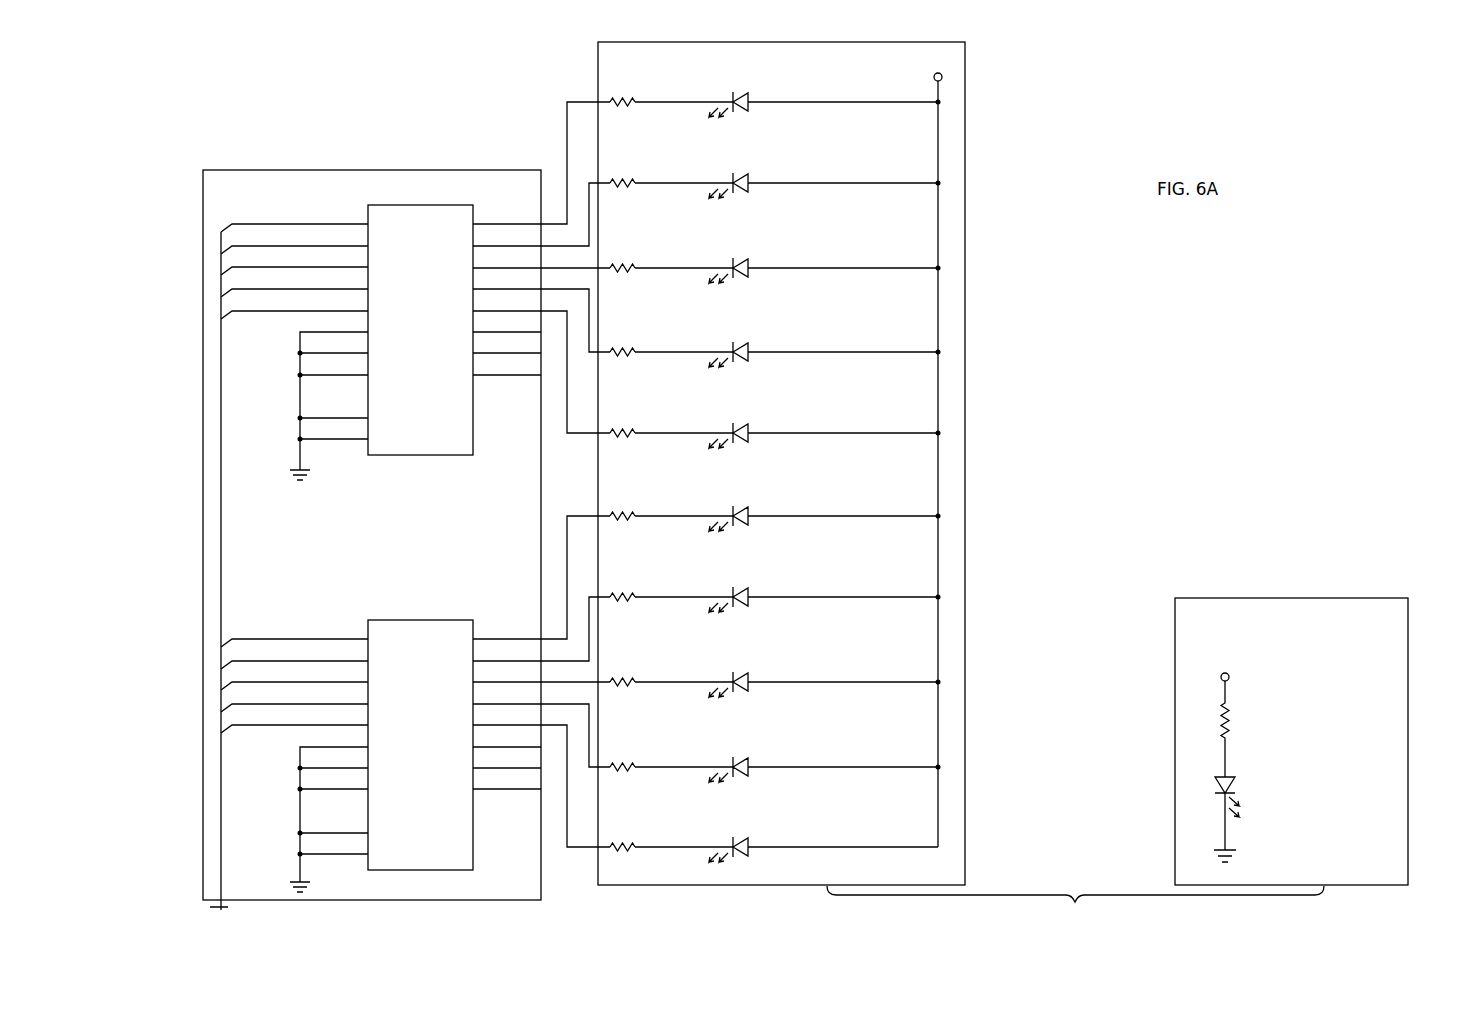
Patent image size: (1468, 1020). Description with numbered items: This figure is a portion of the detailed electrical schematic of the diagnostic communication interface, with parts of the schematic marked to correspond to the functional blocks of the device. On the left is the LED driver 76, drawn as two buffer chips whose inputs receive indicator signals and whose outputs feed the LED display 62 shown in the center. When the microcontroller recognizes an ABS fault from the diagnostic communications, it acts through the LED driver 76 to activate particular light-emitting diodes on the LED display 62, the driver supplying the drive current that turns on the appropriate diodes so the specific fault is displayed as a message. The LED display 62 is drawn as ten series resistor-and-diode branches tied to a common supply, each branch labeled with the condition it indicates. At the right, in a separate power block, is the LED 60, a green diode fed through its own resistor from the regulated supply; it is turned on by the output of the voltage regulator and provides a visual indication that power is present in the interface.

The LED driver 76 is at (203, 423).
The LED display 62 is at (965, 335).
The LED 60 is at (1408, 715).